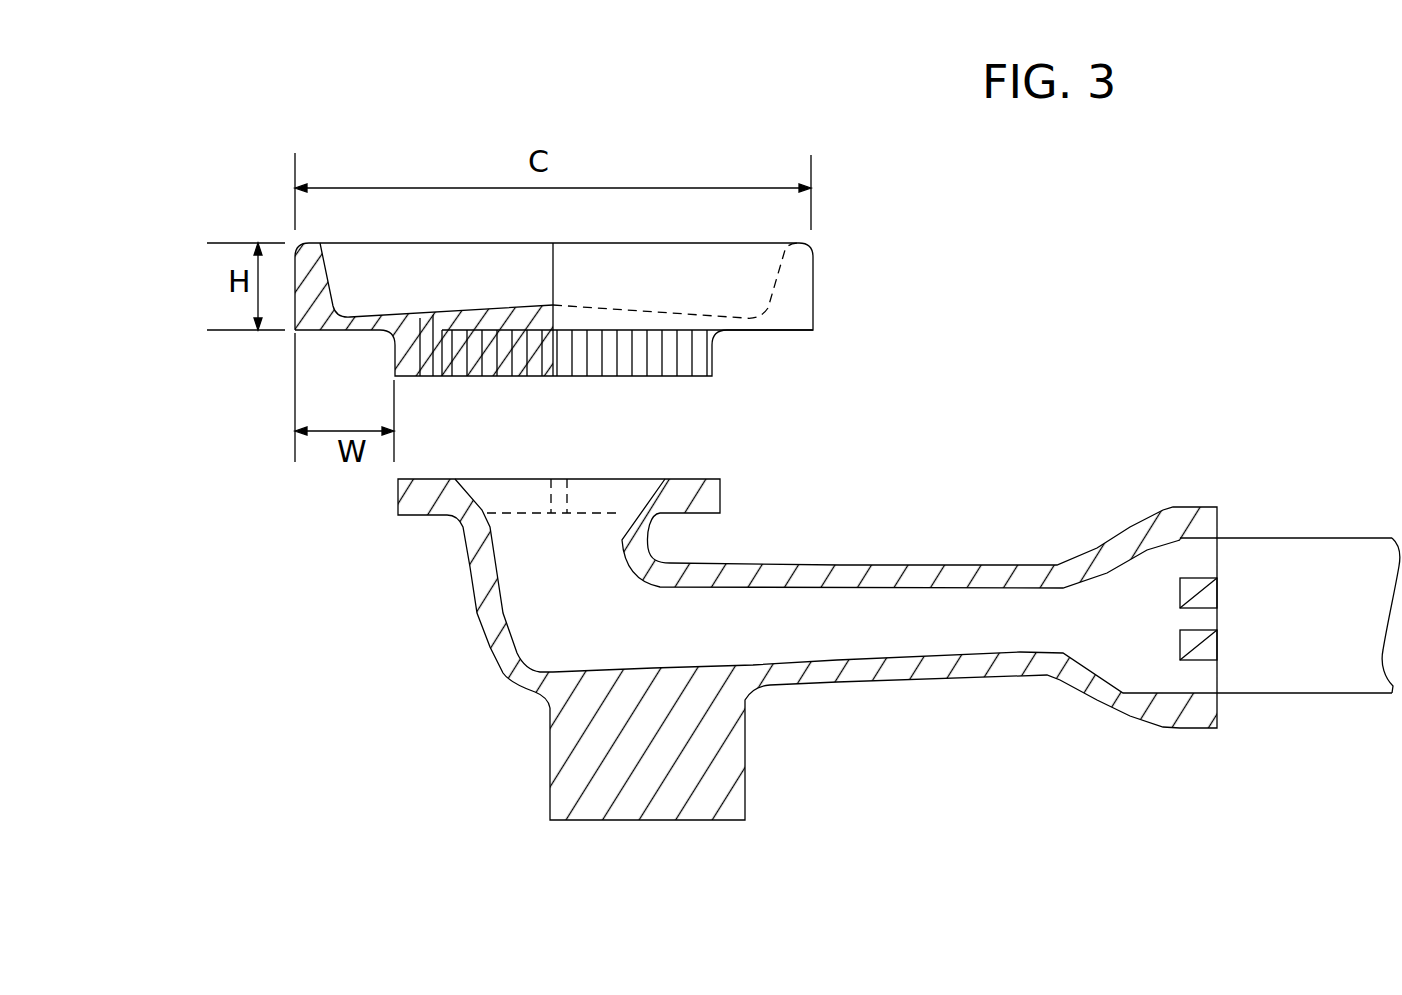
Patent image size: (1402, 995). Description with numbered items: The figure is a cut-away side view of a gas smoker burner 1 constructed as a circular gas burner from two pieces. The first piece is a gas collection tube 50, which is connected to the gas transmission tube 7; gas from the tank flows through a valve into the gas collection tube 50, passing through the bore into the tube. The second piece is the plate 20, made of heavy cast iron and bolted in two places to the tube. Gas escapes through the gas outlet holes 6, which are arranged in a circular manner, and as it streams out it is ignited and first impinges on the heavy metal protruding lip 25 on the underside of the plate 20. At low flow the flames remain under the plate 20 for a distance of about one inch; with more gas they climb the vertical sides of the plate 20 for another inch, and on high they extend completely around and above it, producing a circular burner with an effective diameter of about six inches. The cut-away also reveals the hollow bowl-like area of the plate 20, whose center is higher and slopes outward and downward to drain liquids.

The gas smoker burner 1 is at (431, 604).
The plate 20 is at (812, 277).
The heavy metal protruding lip 25 is at (760, 332).
The gas outlet holes 6 is at (690, 377).
The gas collection tube 50 is at (935, 628).
The gas transmission tube 7 is at (1323, 538).